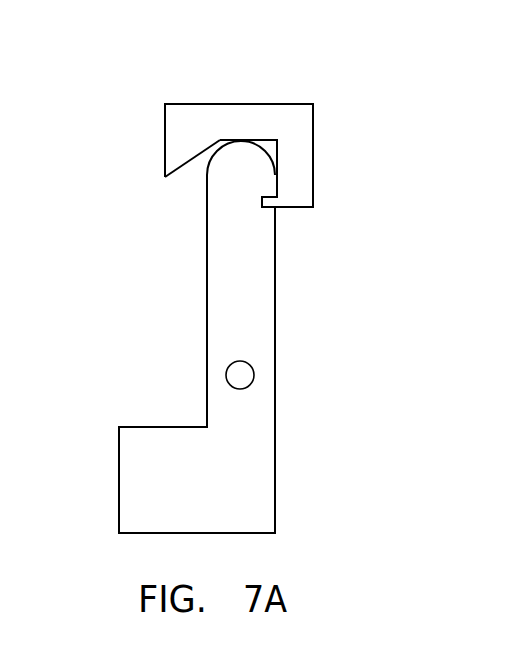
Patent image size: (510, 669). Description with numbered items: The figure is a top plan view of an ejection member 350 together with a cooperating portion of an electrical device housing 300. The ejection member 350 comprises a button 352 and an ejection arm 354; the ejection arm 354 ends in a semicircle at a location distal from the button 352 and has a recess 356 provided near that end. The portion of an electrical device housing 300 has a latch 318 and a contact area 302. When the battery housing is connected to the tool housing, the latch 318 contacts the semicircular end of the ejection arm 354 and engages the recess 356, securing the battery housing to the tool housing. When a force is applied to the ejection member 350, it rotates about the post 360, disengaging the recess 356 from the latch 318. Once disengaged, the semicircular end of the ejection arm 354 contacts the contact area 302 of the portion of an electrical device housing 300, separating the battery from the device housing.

The portion of an electrical device housing 300 is at (293, 117).
The contact area 302 is at (182, 158).
The latch 318 is at (280, 202).
The ejection member 350 is at (262, 508).
The button 352 is at (125, 500).
The ejection arm 354 is at (225, 163).
The recess 356 is at (272, 209).
The post 360 is at (247, 375).